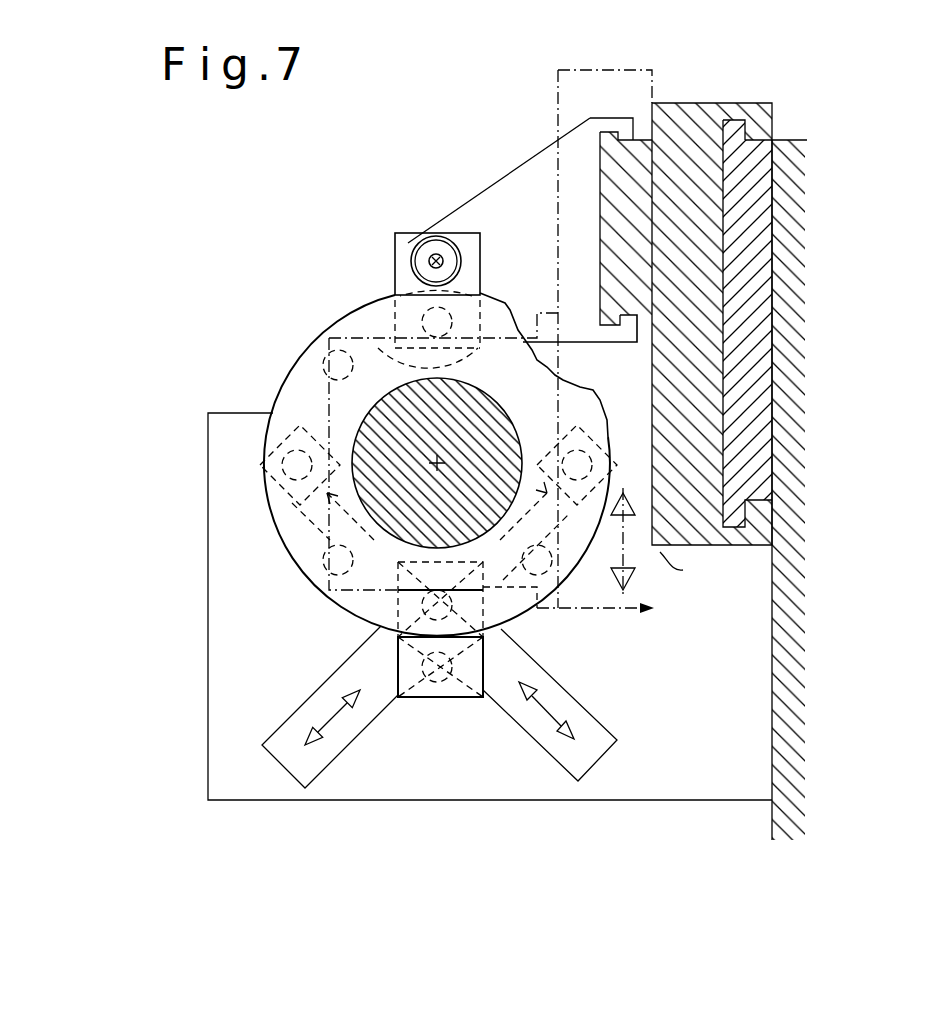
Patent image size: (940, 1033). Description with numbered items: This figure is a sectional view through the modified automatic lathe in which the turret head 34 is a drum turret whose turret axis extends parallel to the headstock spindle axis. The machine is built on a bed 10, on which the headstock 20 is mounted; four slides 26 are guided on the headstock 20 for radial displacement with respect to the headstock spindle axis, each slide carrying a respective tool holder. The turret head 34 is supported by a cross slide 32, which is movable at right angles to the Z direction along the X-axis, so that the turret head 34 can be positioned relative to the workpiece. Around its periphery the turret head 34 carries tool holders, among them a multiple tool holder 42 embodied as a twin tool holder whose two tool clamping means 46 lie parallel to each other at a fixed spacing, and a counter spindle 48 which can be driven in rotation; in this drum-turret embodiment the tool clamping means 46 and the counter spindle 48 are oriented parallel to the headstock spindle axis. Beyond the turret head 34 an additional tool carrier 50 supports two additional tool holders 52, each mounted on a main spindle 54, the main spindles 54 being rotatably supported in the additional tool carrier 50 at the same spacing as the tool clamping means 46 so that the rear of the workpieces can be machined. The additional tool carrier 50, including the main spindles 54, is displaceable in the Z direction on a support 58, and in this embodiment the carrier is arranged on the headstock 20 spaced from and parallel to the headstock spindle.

The bed 10 is at (790, 648).
The headstock 20 is at (228, 727).
The slides 26 is at (290, 503).
The cross slide 32 is at (656, 612).
The turret head 34 is at (280, 380).
The multiple tool holder 42 is at (432, 699).
The tool clamping means 46 is at (440, 632).
The counter spindle 48 is at (417, 362).
The additional tool carrier 50 is at (527, 180).
The additional tool holders 52 is at (447, 233).
The main spindles 54 is at (410, 233).
The support 58 is at (690, 112).